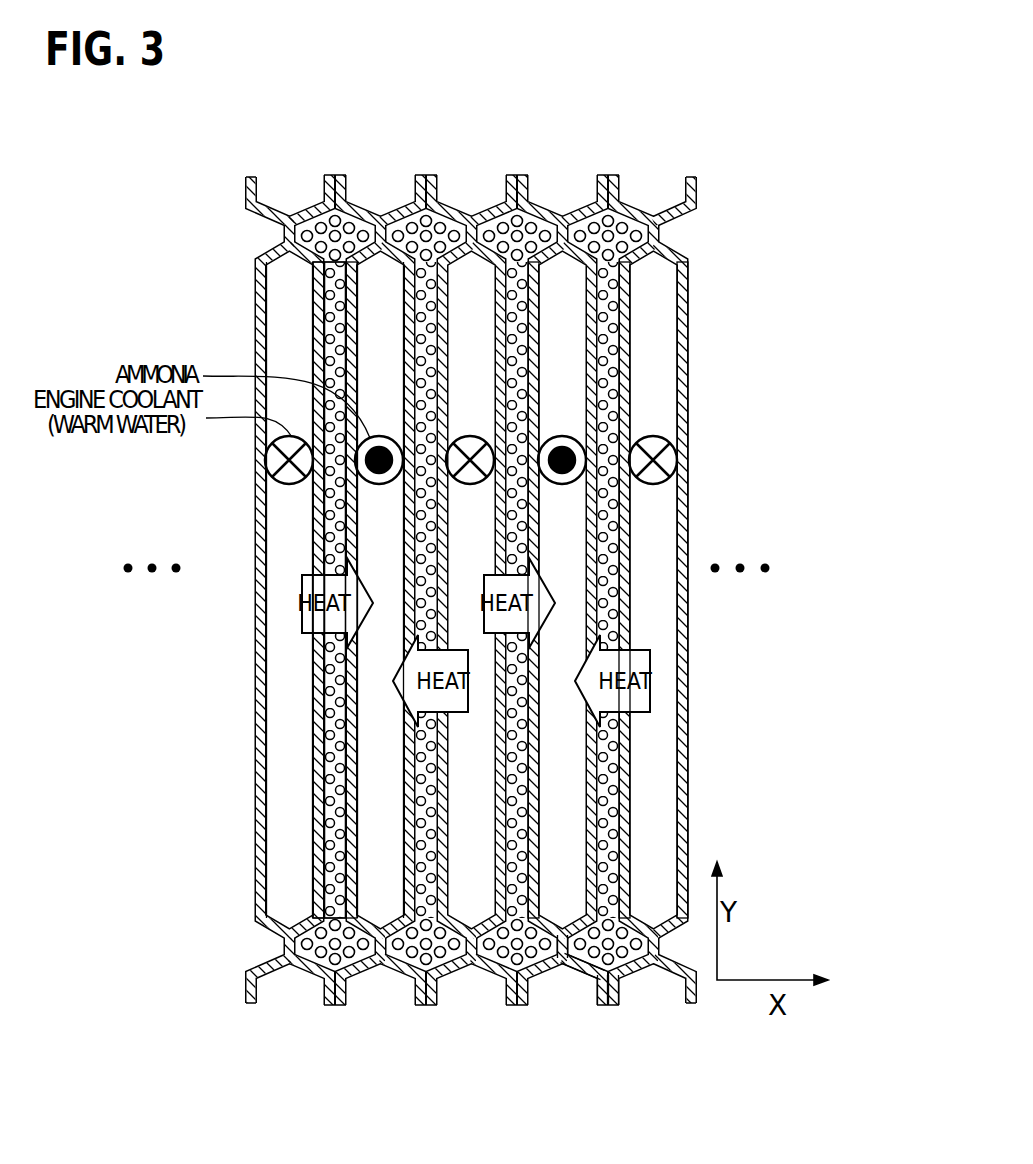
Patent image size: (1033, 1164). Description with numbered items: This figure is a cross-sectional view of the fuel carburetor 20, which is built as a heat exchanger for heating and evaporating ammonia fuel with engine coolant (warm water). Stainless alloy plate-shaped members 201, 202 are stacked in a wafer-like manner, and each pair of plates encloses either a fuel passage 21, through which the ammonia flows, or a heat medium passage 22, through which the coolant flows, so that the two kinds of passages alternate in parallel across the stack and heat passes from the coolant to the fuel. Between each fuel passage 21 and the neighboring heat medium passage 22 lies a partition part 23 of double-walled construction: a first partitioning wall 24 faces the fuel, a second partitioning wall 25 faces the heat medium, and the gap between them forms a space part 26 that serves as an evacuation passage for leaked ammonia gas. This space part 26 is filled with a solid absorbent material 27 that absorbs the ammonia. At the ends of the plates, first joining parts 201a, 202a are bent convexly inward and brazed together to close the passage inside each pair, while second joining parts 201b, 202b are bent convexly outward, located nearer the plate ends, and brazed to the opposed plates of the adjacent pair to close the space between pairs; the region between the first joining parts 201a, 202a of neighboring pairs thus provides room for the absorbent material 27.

The fuel carburetor 20 is at (536, 158).
The fuel passage 21 is at (373, 318).
The heat medium passage 22 is at (285, 528).
The partition part 23 is at (166, 680).
The first partitioning wall 24 is at (330, 690).
The second partitioning wall 25 is at (317, 742).
The space part 26 is at (327, 810).
The absorbent material 27 is at (327, 863).
The plate-shaped member 201 is at (625, 757).
The plate-shaped member 202 is at (690, 787).
The first joining part 201a is at (560, 963).
The first joining part 202a is at (583, 973).
The second joining part 201b is at (617, 983).
The second joining part 202b is at (598, 992).